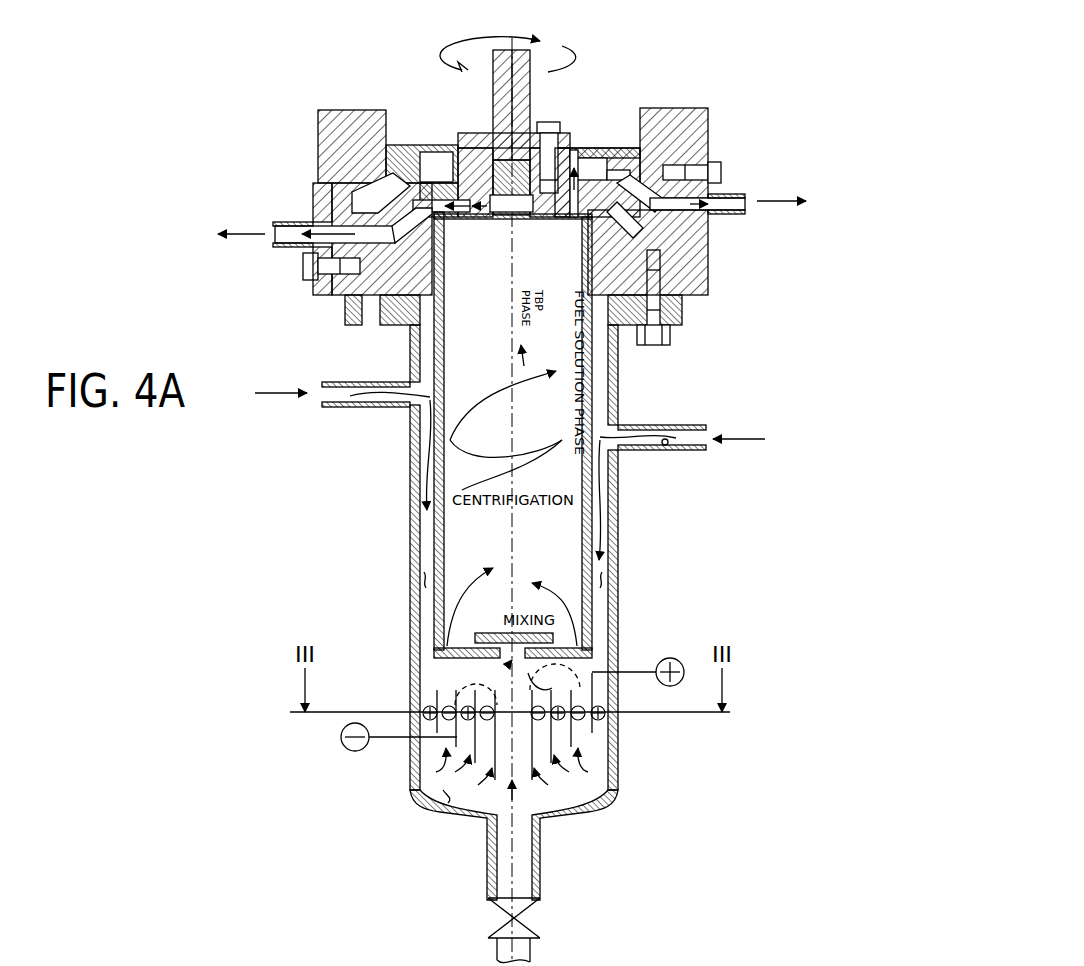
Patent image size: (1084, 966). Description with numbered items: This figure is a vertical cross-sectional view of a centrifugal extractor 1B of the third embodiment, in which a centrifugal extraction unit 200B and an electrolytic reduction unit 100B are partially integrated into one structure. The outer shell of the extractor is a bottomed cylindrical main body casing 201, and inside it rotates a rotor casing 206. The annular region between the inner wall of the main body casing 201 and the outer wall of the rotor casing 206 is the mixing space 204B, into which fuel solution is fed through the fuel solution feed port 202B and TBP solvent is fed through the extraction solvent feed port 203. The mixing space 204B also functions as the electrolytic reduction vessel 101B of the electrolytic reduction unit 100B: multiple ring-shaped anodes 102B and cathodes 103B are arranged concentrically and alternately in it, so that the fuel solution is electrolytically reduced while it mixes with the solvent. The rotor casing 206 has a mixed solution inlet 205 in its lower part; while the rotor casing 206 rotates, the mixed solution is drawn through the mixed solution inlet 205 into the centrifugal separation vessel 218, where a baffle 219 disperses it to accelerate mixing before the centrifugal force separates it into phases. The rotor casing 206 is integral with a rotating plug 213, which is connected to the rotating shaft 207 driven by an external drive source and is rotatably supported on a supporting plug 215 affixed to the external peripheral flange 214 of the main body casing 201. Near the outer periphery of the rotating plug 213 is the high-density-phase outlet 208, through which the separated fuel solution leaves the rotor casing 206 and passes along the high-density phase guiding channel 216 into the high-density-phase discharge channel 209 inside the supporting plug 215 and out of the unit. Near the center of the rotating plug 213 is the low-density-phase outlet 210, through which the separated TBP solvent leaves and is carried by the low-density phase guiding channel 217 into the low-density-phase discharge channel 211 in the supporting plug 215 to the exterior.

The centrifugal extractor 1B is at (804, 34).
The centrifugal extraction unit 200B is at (724, 53).
The rotating shaft 207 is at (493, 88).
The low-density phase guiding channel 217 is at (446, 180).
The rotating plug 213 is at (565, 150).
The high-density phase guiding channel 216 is at (606, 160).
The supporting plug 215 is at (708, 112).
The high-density-phase discharge channel 209 is at (745, 195).
The low-density-phase discharge channel 211 is at (278, 238).
The low-density-phase outlet 210 is at (526, 224).
The high-density-phase outlet 208 is at (572, 224).
The external peripheral flange 214 is at (345, 318).
The extraction solvent feed port 203 is at (322, 392).
The fuel solution feed port 202B is at (665, 445).
The centrifugal separation vessel 218 is at (440, 516).
The main body casing 201 is at (410, 543).
The mixing space 204B is at (424, 578).
The rotor casing 206 is at (434, 612).
The baffle 219 is at (484, 632).
The mixed solution inlet 205 is at (545, 688).
The anode 102B is at (592, 726).
The cathode 103B is at (572, 733).
The electrolytic reduction unit 100B is at (656, 796).
The electrolytic reduction vessel 101B is at (580, 790).